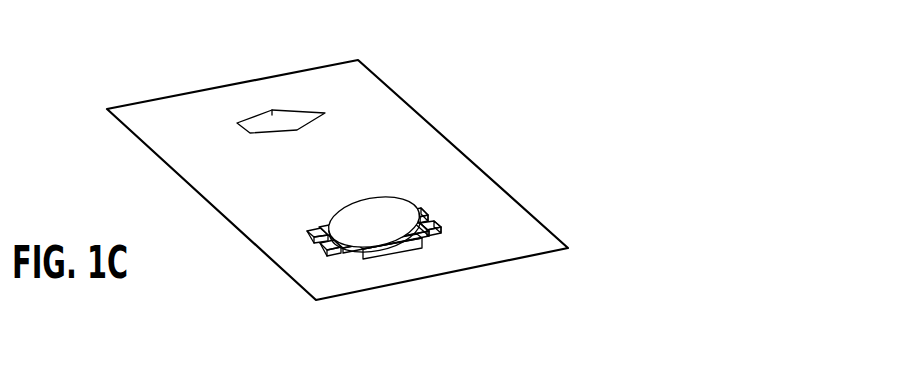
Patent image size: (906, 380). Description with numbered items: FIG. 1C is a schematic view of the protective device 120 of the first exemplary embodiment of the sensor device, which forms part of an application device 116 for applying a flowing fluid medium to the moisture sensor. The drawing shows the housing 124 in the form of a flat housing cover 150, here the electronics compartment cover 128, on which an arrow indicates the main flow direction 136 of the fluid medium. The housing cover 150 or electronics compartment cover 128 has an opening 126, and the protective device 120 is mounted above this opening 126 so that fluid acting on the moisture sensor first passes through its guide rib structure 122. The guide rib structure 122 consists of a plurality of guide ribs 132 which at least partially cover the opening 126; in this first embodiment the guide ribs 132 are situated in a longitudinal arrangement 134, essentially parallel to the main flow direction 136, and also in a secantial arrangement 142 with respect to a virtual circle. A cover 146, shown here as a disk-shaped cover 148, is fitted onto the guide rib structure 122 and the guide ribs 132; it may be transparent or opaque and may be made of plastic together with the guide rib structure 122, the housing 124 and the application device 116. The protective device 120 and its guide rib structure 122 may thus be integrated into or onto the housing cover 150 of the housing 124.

The application device 116 is at (517, 148).
The protective device 120 is at (427, 203).
The guide rib structure 122 is at (512, 279).
The housing 124 is at (448, 255).
The opening 126 is at (358, 260).
The electronics compartment cover 128 is at (180, 130).
The guide ribs 132 is at (512, 279).
The longitudinal arrangement 134 is at (512, 279).
The main flow direction 136 is at (298, 115).
The secantial arrangement 142 is at (437, 236).
The cover 146 is at (398, 155).
The disk-shaped cover 148 is at (390, 212).
The housing cover 150 is at (337, 180).